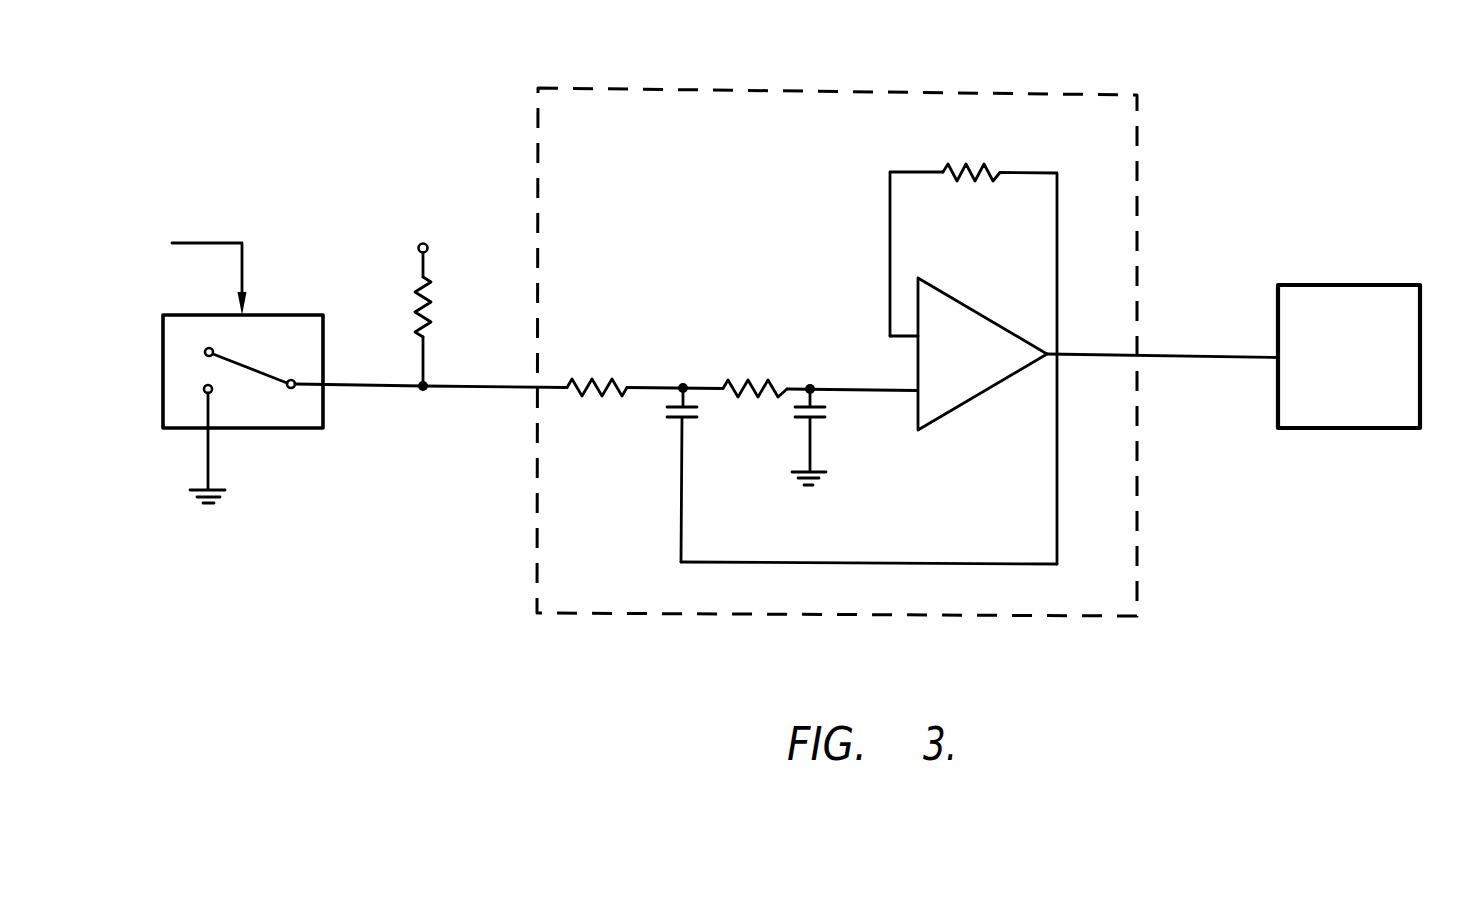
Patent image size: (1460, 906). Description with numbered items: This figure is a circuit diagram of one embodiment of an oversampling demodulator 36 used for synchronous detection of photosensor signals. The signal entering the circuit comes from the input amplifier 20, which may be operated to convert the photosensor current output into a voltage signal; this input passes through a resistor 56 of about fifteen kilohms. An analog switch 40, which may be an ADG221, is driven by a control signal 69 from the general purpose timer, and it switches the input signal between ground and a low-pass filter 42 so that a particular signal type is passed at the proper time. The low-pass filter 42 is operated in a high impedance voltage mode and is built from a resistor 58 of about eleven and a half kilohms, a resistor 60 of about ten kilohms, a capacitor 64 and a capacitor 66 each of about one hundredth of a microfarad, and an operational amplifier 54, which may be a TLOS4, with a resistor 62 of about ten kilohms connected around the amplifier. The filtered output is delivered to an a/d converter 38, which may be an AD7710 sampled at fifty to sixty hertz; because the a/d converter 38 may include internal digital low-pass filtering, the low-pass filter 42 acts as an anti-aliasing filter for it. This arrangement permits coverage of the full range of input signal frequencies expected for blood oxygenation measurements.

The input amplifier 20 is at (427, 202).
The oversampling demodulator 36 is at (1338, 59).
The a/d converter 38 is at (1383, 285).
The analog switch 40 is at (293, 315).
The low-pass filter 42 is at (1137, 241).
The operational amplifier 54 is at (968, 305).
The resistor 56 is at (413, 314).
The resistor 58 is at (598, 384).
The resistor 60 is at (752, 383).
The resistor 62 is at (977, 172).
The capacitor 64 is at (688, 420).
The capacitor 66 is at (815, 420).
The control signal 69 is at (188, 243).